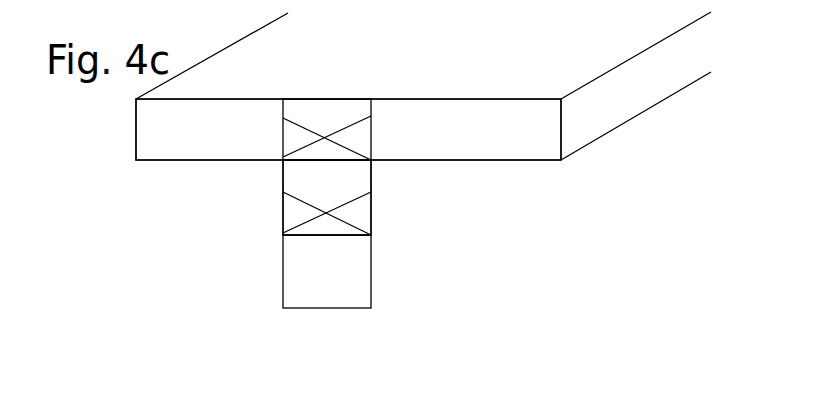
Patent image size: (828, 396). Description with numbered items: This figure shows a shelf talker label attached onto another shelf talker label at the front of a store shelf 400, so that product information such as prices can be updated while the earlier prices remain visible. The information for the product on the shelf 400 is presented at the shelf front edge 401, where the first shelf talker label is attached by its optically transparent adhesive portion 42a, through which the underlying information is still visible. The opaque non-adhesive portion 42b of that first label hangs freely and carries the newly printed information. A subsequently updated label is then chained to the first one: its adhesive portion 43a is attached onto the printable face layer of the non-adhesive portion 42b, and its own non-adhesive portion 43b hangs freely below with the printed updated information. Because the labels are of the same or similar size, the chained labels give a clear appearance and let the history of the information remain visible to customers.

The shelf 400 is at (412, 68).
The shelf front edge 401 is at (499, 150).
The adhesive portion 42a is at (292, 152).
The non-adhesive portion 42b is at (290, 216).
The adhesive portion of the label 43a is at (362, 213).
The non-adhesive portion 43b is at (362, 276).